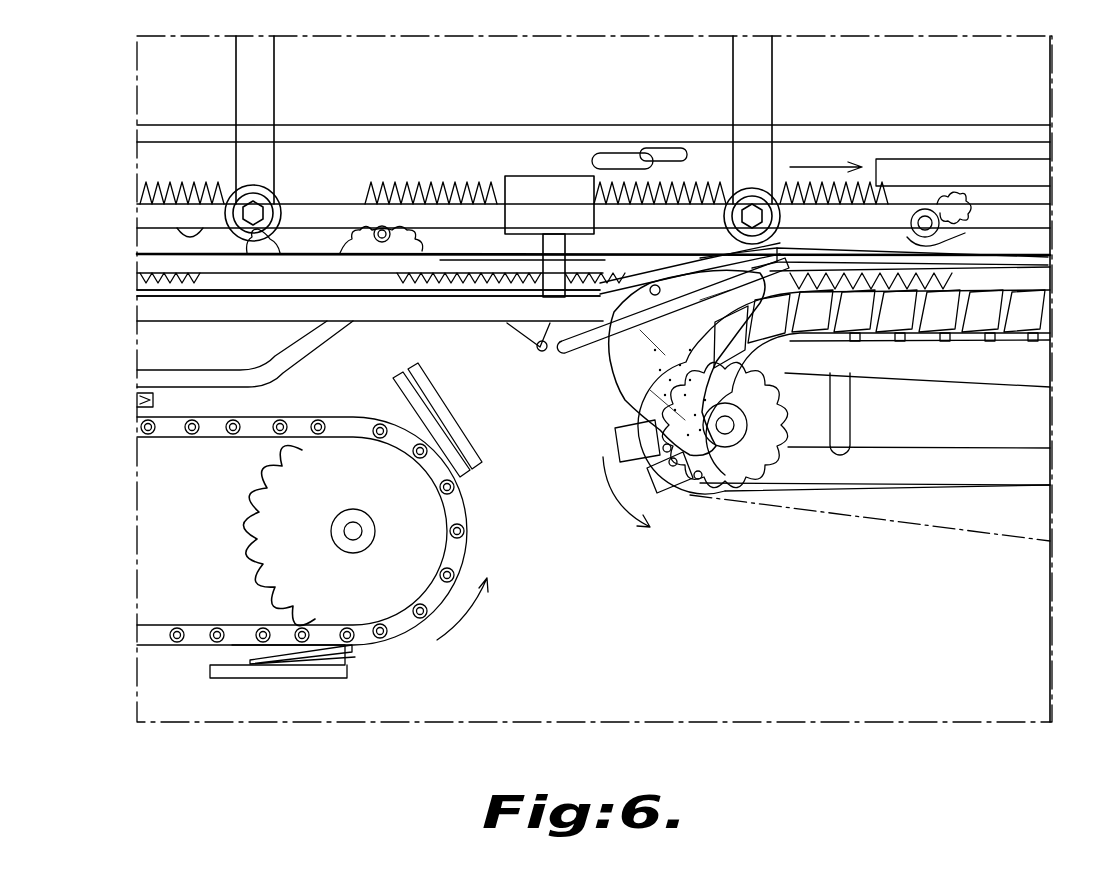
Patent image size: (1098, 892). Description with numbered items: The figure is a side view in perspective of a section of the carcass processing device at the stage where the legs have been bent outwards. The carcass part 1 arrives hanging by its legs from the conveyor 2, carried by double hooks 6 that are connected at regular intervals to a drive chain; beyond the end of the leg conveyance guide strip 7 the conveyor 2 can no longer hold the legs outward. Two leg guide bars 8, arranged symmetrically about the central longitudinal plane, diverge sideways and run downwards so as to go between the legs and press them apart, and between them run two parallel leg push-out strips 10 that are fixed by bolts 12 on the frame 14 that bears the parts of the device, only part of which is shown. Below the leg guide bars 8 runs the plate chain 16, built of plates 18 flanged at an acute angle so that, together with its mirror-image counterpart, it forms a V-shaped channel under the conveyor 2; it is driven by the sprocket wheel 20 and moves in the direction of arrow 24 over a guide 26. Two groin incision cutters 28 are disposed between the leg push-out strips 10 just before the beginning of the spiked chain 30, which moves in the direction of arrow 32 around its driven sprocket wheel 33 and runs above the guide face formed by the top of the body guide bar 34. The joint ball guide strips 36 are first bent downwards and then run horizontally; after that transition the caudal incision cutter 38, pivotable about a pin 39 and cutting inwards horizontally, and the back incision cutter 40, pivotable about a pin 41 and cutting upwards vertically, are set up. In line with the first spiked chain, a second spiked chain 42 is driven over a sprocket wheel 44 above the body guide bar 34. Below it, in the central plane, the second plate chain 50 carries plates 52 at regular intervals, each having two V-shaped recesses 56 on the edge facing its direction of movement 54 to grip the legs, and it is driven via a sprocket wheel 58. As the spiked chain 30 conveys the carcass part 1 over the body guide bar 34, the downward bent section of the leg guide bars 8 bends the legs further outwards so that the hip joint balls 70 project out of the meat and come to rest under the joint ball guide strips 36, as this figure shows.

The carcass part 1 is at (620, 376).
The conveyor 2 is at (863, 123).
The double hooks 6 is at (618, 160).
The leg conveyance guide strip 7 is at (955, 168).
The leg guide bars 8 is at (1045, 268).
The leg push-out strips 10 is at (1040, 240).
The bolts 12 is at (975, 235).
The frame 14 is at (260, 86).
The plate chain 16 is at (855, 515).
The plates 18 is at (615, 440).
The sprocket wheel 20 is at (735, 485).
The arrow 24 is at (610, 494).
The guide 26 is at (970, 375).
The groin incision cutters 28 is at (945, 258).
The spiked chain 30 is at (462, 180).
The arrow 32 is at (812, 160).
The sprocket wheel 33 is at (405, 226).
The body guide bar 34 is at (392, 314).
The joint ball guide strips 36 is at (452, 292).
The caudal incision cutter 38 is at (522, 297).
The pin 39 is at (553, 240).
The back incision cutter 40 is at (522, 338).
The pin 41 is at (541, 353).
The second spiked chain 42 is at (150, 185).
The sprocket wheel 44 is at (150, 236).
The second plate chain 50 is at (343, 418).
The plates 52 is at (472, 462).
The direction of movement 54 is at (462, 632).
The V-shaped recesses 56 is at (355, 660).
The sprocket wheel 58 is at (262, 496).
The hip joint balls 70 is at (652, 288).